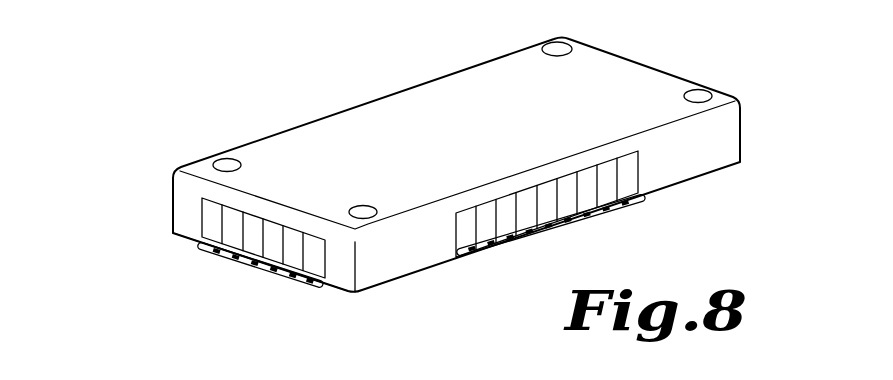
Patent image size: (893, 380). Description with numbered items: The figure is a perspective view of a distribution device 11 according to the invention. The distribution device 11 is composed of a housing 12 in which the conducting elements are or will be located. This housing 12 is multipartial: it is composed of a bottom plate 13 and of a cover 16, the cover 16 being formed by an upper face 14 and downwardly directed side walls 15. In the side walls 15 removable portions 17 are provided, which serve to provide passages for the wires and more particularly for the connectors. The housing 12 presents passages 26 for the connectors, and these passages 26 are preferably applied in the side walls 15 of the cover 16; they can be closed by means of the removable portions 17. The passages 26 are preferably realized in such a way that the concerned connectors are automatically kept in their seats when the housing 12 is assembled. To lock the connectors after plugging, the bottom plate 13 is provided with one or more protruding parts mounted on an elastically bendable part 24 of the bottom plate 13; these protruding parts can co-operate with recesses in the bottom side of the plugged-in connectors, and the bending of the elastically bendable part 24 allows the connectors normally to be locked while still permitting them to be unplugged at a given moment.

The distribution device 11 is at (150, 80).
The housing 12 is at (402, 18).
The bottom plate 13 is at (198, 246).
The upper face 14 is at (355, 135).
The side walls 15 is at (183, 212).
The cover 16 is at (607, 92).
The removable portions 17 is at (277, 246).
The elastically bendable part 24 is at (302, 288).
The passages 26 is at (632, 180).